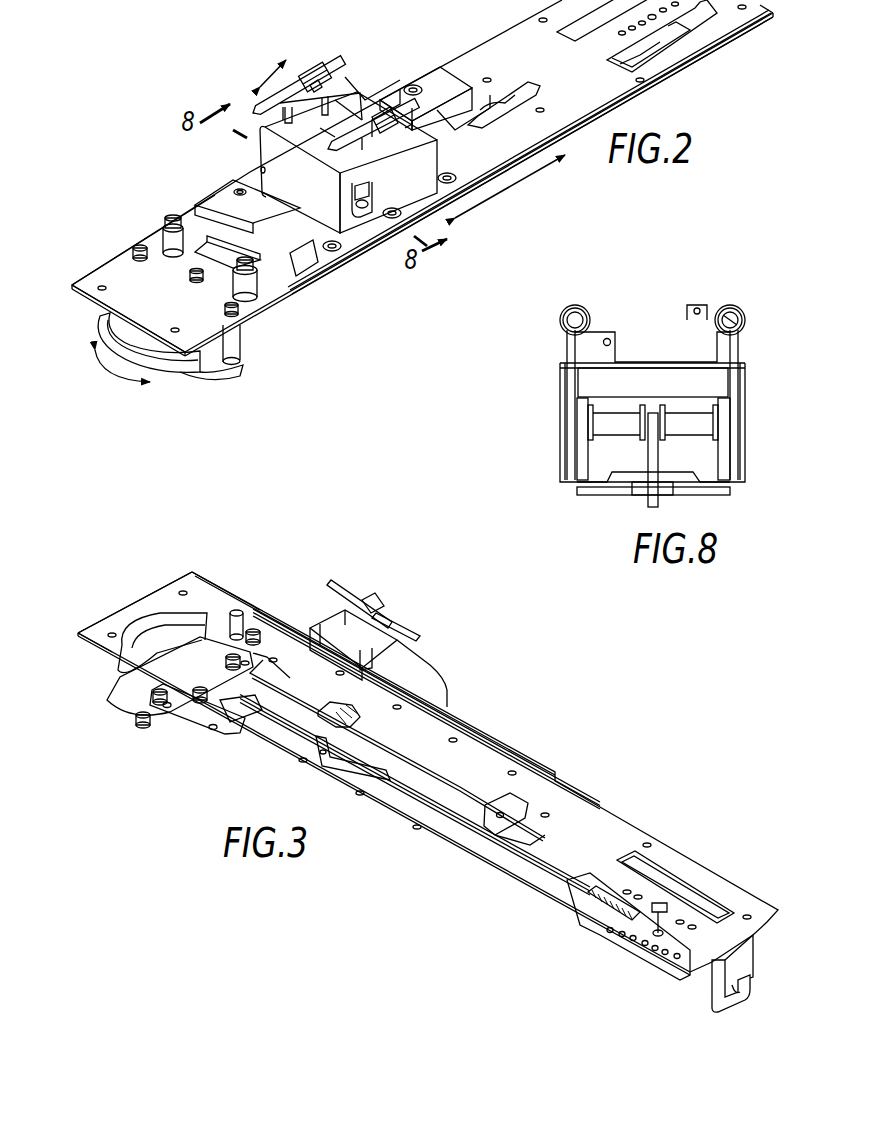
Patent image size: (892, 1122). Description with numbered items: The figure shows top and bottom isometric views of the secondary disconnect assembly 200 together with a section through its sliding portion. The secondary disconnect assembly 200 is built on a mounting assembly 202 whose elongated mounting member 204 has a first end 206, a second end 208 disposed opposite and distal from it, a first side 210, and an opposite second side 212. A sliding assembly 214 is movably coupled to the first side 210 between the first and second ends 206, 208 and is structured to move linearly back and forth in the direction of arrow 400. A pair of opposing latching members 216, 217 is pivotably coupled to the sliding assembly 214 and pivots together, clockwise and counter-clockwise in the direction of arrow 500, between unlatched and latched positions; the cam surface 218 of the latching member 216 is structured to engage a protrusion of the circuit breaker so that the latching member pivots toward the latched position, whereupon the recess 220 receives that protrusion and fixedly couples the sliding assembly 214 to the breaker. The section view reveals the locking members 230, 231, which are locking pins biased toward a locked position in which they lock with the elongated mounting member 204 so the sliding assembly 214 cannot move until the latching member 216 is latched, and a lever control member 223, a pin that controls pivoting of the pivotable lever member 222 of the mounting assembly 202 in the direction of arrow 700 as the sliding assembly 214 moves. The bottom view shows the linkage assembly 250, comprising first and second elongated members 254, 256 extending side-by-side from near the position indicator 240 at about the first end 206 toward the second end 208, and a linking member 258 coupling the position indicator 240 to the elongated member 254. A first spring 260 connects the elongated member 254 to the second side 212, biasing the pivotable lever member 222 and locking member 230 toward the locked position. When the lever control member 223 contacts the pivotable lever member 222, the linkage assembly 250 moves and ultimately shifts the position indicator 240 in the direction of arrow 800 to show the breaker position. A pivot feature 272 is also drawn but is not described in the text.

In FIG. 2, the secondary disconnect assembly 200 is at (700, 92).
In FIG. 3, the secondary disconnect assembly 200 is at (99, 755).
In FIG. 2, the mounting assembly 202 is at (138, 178).
In FIG. 3, the mounting assembly 202 is at (598, 790).
In FIG. 2, the elongated mounting member 204 is at (120, 262).
In FIG. 3, the elongated mounting member 204 is at (258, 622).
In FIG. 2, the first end 206 is at (75, 280).
In FIG. 3, the first end 206 is at (78, 645).
In FIG. 2, the second end 208 is at (775, 33).
In FIG. 3, the second end 208 is at (772, 900).
In FIG. 2, the first side 210 is at (149, 304).
In FIG. 3, the first side 210 is at (240, 593).
In FIG. 2, the second side 212 is at (300, 287).
In FIG. 3, the second side 212 is at (293, 680).
In FIG. 2, the sliding assembly 214 is at (232, 92).
In FIG. 8, the sliding assembly 214 is at (553, 360).
In FIG. 3, the sliding assembly 214 is at (448, 686).
In FIG. 2, the latching member 216 is at (293, 97).
In FIG. 8, the latching member 216 is at (573, 345).
In FIG. 2, the latching member 217 is at (377, 147).
In FIG. 8, the latching member 217 is at (735, 347).
In FIG. 2, the cam surface 218 is at (272, 133).
In FIG. 2, the recess 220 is at (297, 102).
In FIG. 3, the pivotable lever member 222 is at (345, 760).
In FIG. 8, the lever control member 223 is at (652, 492).
In FIG. 8, the locking member 230 is at (588, 433).
In FIG. 8, the locking member 231 is at (723, 425).
In FIG. 2, the position indicator 240 is at (90, 322).
In FIG. 3, the position indicator 240 is at (148, 632).
In FIG. 3, the linkage assembly 250 is at (452, 770).
In FIG. 3, the elongated member 254 is at (540, 880).
In FIG. 3, the elongated member 256 is at (540, 845).
In FIG. 3, the linking member 258 is at (202, 722).
In FIG. 3, the first spring 260 is at (585, 905).
In FIG. 3, the pivot pin 272 is at (237, 730).
In FIG. 2, the arrow 400 is at (500, 205).
In FIG. 2, the arrow 500 is at (268, 75).
In FIG. 2, the arrow 700 is at (200, 240).
In FIG. 2, the arrow 800 is at (112, 387).